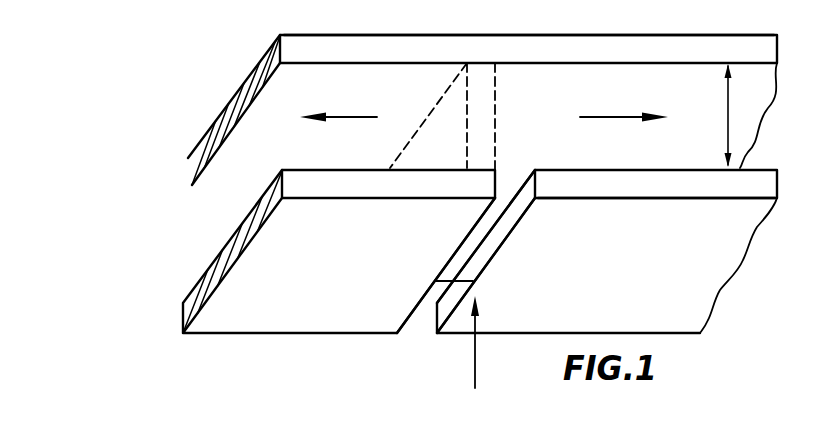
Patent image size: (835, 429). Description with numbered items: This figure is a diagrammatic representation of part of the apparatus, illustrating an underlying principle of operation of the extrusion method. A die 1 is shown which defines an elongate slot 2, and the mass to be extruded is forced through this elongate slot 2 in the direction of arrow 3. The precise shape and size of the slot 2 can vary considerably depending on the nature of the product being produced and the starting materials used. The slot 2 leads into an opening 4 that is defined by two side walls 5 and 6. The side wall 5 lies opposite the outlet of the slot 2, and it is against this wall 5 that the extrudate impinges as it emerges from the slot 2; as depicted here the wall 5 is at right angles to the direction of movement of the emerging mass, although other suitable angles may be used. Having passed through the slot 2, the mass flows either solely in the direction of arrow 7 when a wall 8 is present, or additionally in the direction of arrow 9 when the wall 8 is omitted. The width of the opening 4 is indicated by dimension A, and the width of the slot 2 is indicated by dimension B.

The die 1 is at (313, 300).
The elongate slot 2 is at (477, 239).
The arrow 3 is at (475, 354).
The opening 4 is at (551, 76).
The side wall 5 is at (615, 50).
The side wall 6 is at (670, 184).
The arrow 7 is at (608, 117).
The wall 8 is at (448, 97).
The arrow 9 is at (351, 117).
The dimension A is at (727, 117).
The dimension B is at (460, 281).